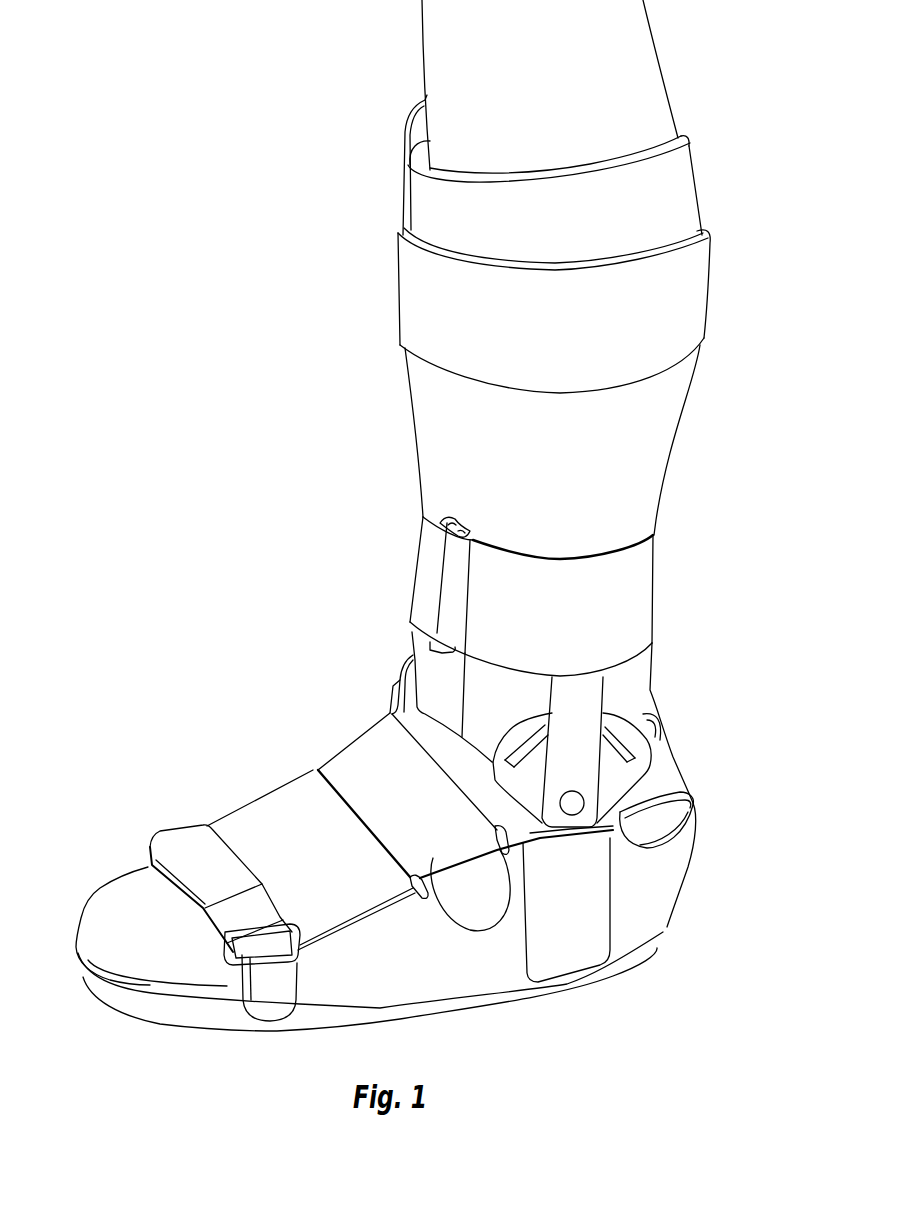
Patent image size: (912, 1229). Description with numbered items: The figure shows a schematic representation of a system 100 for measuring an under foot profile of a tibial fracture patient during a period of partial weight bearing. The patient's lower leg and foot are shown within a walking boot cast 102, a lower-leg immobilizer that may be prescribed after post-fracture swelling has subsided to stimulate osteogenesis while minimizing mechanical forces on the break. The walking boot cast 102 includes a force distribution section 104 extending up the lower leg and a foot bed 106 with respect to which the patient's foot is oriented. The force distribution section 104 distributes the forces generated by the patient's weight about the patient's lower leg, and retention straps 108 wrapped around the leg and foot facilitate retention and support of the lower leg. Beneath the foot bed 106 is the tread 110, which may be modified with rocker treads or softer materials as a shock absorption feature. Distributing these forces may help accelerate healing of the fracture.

The system 100 is at (410, 523).
The walking boot cast 102 is at (314, 492).
The force distribution section 104 is at (724, 458).
The foot bed 106 is at (78, 940).
The retention straps 108 is at (697, 304).
The tread 110 is at (517, 997).